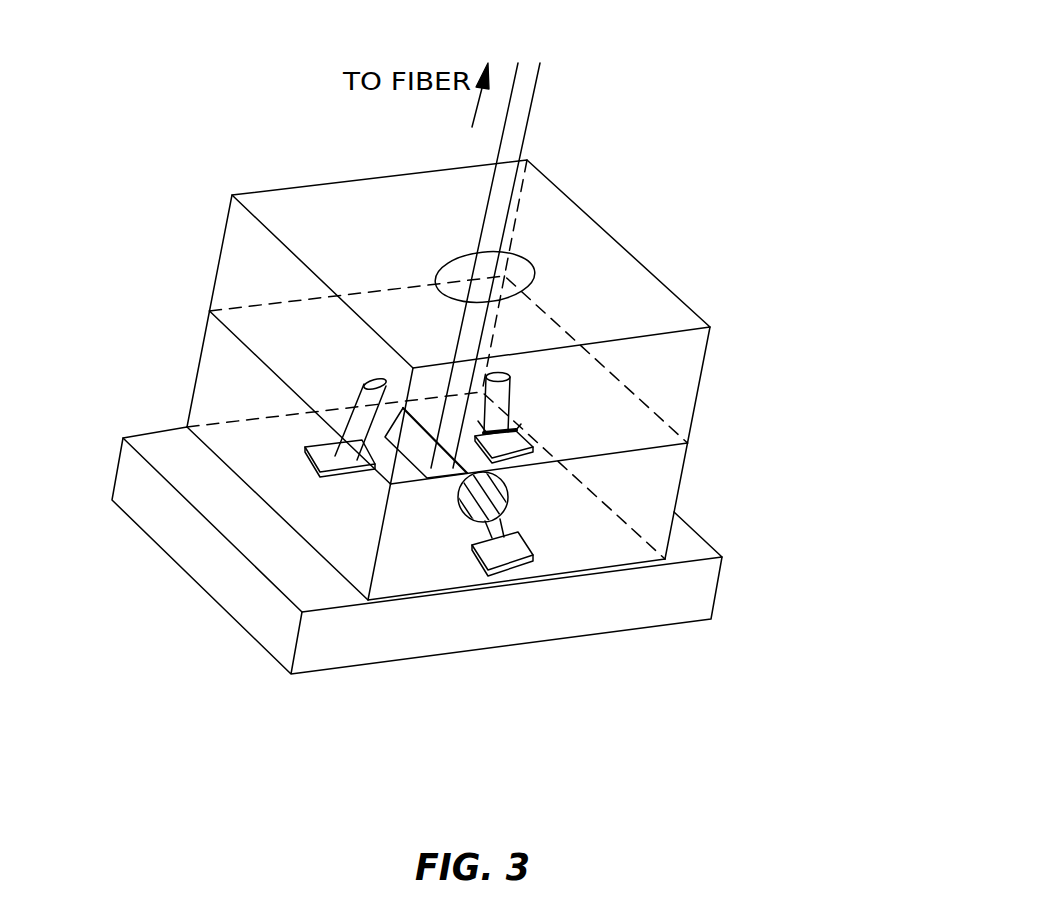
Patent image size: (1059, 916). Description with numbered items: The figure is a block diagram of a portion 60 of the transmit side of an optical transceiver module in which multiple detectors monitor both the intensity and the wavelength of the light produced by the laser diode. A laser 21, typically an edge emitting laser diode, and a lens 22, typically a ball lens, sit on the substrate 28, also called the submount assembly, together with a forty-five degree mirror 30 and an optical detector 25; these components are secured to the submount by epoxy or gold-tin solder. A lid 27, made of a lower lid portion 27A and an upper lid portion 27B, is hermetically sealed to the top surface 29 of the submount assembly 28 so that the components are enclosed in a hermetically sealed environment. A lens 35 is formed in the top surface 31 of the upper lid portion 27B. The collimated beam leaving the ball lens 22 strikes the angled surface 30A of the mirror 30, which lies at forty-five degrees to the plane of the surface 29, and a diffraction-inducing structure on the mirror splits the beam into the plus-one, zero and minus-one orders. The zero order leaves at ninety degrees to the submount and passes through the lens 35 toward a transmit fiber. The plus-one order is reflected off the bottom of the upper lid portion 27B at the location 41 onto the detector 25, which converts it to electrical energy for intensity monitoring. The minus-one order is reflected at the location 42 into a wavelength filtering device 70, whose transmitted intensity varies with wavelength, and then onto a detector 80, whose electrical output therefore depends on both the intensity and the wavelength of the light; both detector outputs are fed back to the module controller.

The portion of the transmit side of a transceiver module 60 is at (758, 67).
The lid 27 is at (712, 328).
The lower lid portion 27A is at (216, 374).
The upper lid portion 27B is at (245, 278).
The top surface of the upper lid portion 31 is at (588, 262).
The lens 35 is at (470, 253).
The substrate 28 is at (283, 626).
The top surface of the submount assembly 29 is at (175, 452).
The optical detector 25 is at (304, 447).
The location on the bottom of the upper lid portion 41 is at (368, 378).
The 45° mirror 30 is at (420, 478).
The angled surface 30A is at (432, 406).
The location on the bottom of the upper lid portion 42 is at (510, 368).
The wavelength filtering device 70 is at (518, 426).
The detector 80 is at (543, 452).
The lens 22 is at (510, 496).
The laser 21 is at (535, 558).